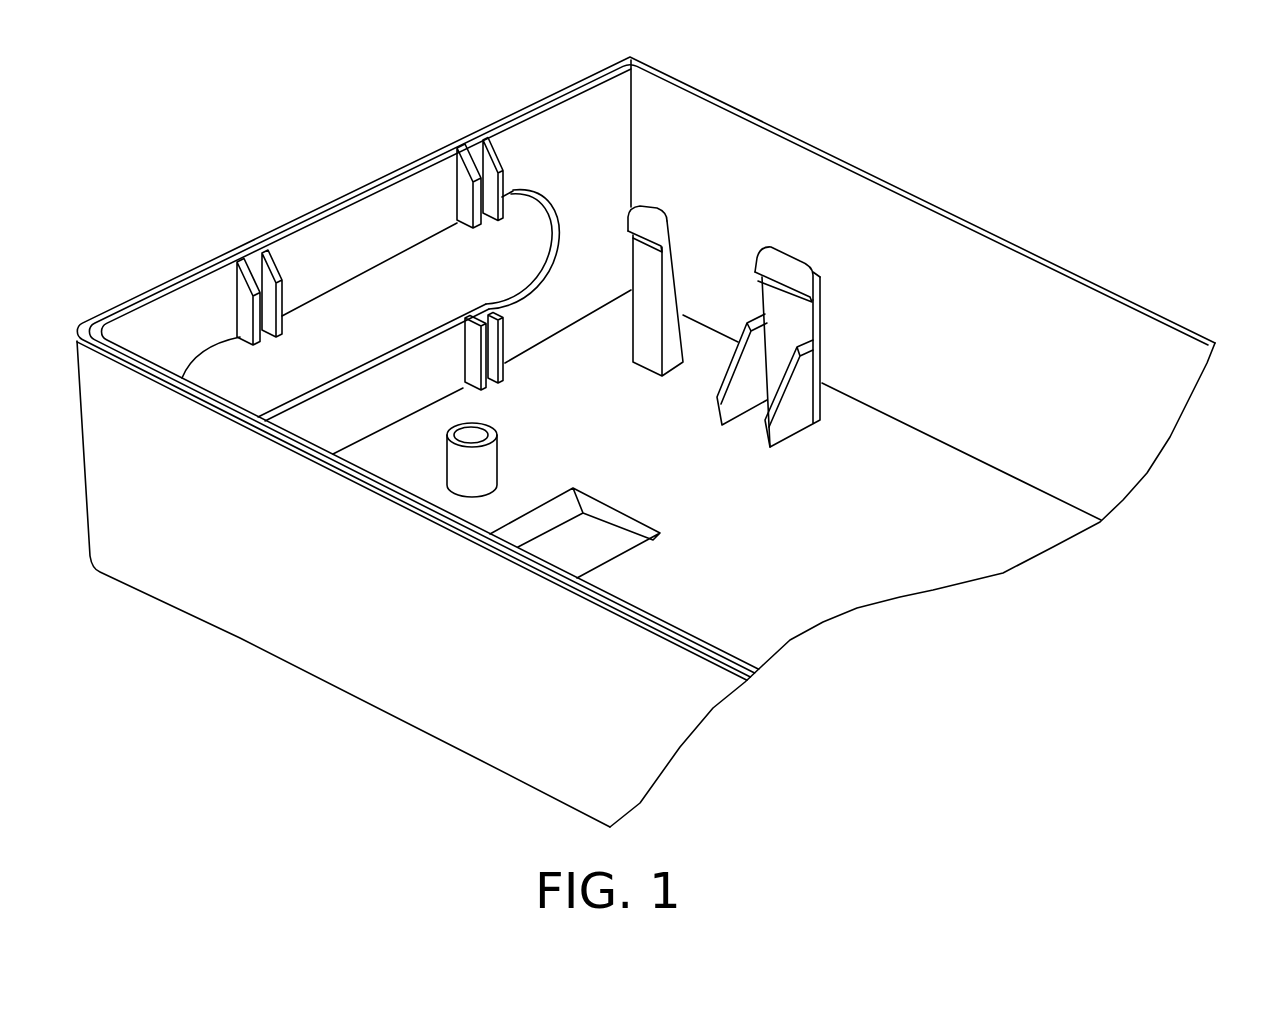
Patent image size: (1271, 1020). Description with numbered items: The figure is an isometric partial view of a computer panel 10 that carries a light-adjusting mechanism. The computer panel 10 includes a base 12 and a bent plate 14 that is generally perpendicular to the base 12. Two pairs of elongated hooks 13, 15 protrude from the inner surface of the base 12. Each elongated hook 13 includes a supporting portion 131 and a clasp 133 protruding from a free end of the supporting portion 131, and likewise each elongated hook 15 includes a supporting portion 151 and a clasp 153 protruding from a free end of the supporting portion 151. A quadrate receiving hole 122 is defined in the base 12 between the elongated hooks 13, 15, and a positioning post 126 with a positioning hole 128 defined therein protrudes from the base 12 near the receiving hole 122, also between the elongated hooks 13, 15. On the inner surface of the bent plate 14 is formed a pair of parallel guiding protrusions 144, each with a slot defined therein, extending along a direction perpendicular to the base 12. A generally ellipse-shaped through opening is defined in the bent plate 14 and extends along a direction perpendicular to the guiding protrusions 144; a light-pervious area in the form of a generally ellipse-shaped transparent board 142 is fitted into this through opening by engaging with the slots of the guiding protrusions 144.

The computer panel 10 is at (1128, 281).
The base 12 is at (910, 570).
The elongated hook 13 is at (888, 76).
The supporting portion 131 is at (673, 280).
The clasp 133 is at (647, 218).
The bent plate 14 is at (400, 217).
The transparent board 142 is at (363, 313).
The guiding protrusions 144 is at (467, 187).
The elongated hook 15 is at (1053, 145).
The supporting portion 151 is at (800, 380).
The clasp 153 is at (790, 268).
The receiving hole 122 is at (567, 538).
The positioning post 126 is at (470, 472).
The positioning hole 128 is at (470, 435).